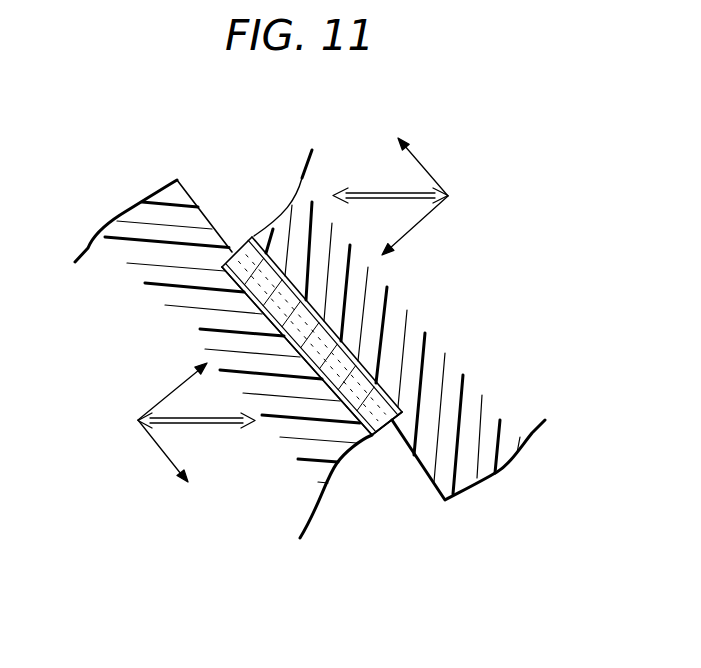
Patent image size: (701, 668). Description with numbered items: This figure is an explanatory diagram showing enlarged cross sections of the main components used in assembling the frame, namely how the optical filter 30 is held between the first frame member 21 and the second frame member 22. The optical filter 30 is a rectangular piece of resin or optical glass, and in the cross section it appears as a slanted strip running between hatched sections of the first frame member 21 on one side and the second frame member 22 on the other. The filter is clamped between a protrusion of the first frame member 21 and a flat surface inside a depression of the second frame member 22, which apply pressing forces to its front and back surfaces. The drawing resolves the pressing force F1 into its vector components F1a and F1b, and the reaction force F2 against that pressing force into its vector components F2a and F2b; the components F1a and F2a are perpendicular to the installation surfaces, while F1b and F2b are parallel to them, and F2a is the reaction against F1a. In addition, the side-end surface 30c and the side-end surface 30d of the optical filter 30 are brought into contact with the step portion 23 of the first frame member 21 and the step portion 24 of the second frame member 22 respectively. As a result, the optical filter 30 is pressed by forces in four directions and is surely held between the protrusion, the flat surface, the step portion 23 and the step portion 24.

The first frame member 21 is at (143, 225).
The second frame member 22 is at (482, 452).
The step portion 23 is at (224, 238).
The step portion 24 is at (377, 440).
The optical filter 30 is at (313, 368).
The side-end surface 30c is at (243, 293).
The side-end surface 30d is at (392, 430).
The pressing force F1 is at (197, 428).
The vector component of pressing force F1 F1a is at (170, 390).
The vector component of pressing force F1 F1b is at (160, 448).
The reaction force F2 is at (380, 190).
The vector component of reaction force F2 F2a is at (417, 228).
The vector component of reaction force F2 F2b is at (432, 164).